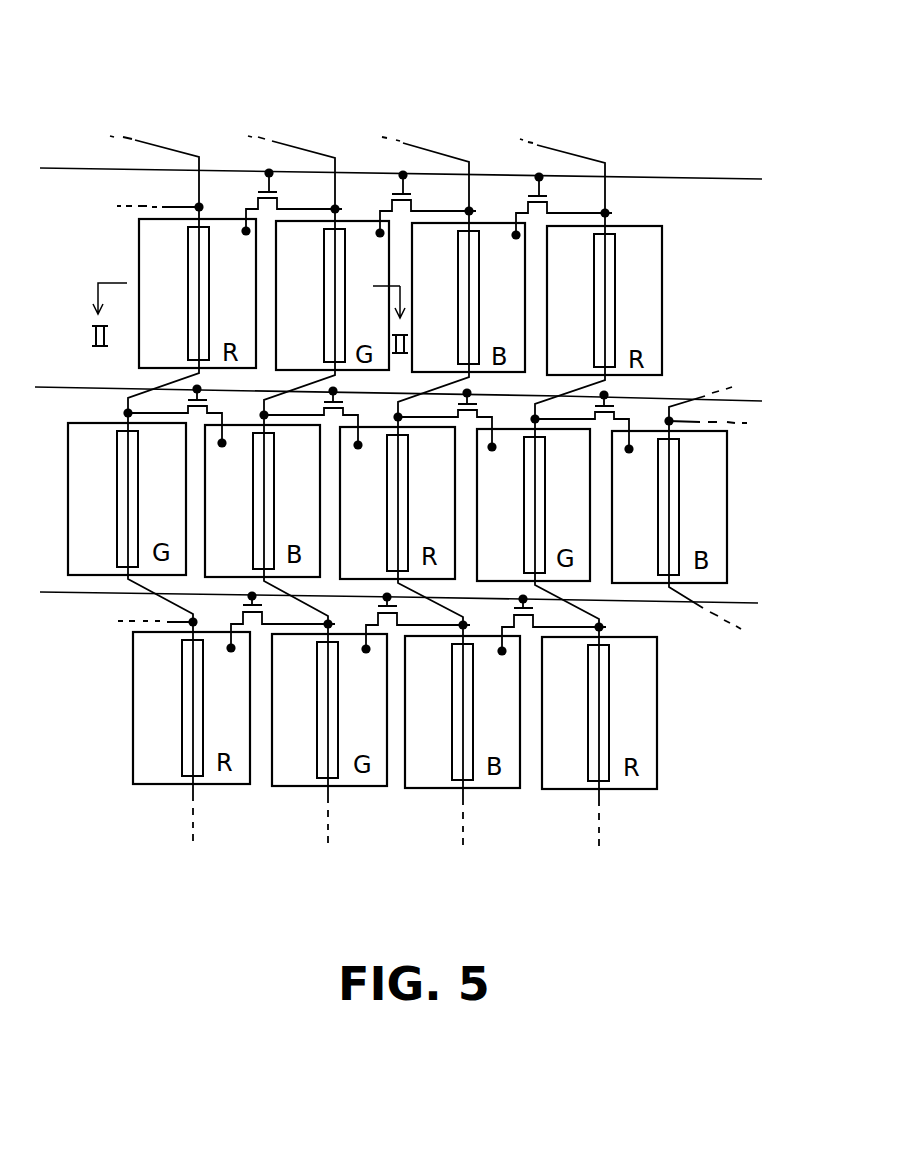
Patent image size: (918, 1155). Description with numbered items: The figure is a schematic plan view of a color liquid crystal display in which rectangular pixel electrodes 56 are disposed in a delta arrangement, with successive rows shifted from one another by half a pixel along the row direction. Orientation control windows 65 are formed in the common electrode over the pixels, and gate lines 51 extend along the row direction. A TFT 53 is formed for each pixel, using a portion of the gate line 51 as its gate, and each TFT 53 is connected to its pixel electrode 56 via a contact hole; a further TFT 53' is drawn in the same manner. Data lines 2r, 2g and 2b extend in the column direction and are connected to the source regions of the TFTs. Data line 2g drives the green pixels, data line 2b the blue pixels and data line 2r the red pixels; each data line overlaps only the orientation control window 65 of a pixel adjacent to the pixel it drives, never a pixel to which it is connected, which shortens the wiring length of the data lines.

The data line 2b is at (124, 137).
The data line 2r is at (258, 137).
The data line 2g is at (396, 139).
The gate line 51 is at (418, 391).
The TFT 53 is at (394, 135).
The thin film transistor 53' is at (661, 282).
The pixel electrode 56 is at (662, 322).
The orientation control window 65 is at (613, 277).